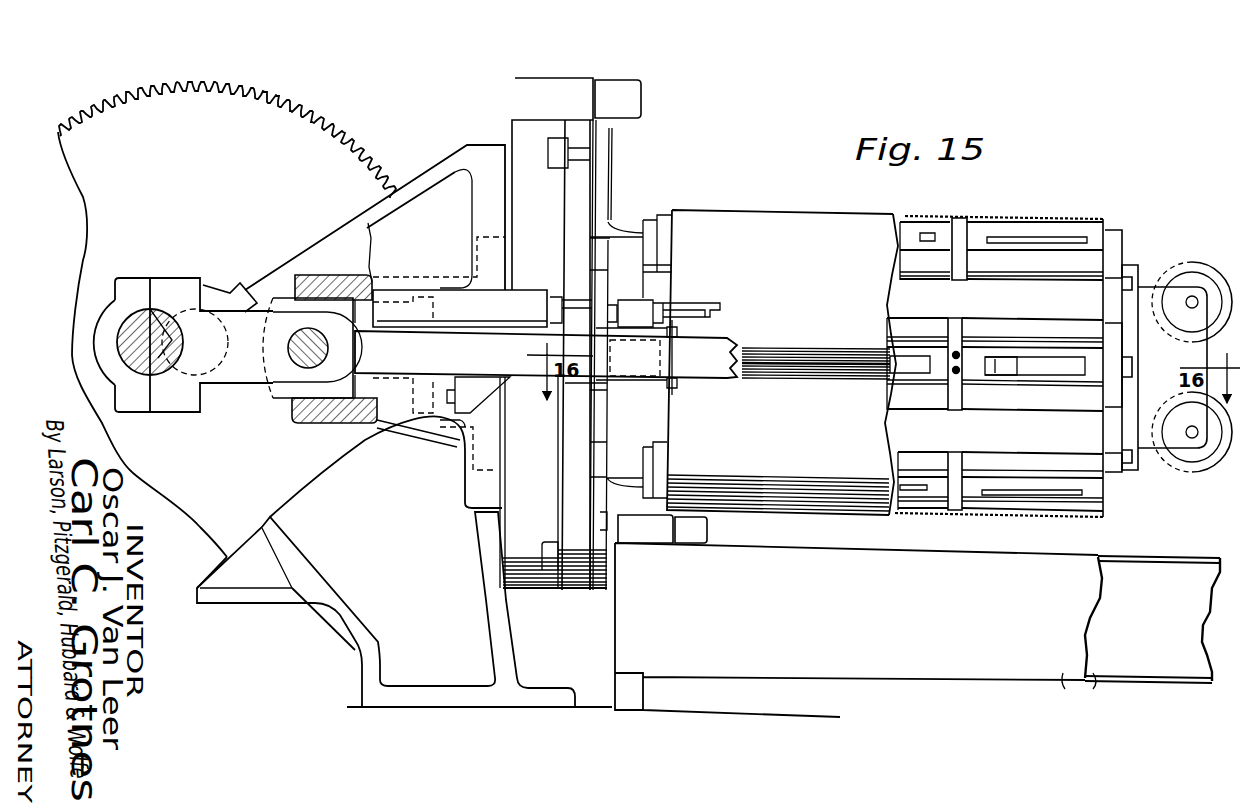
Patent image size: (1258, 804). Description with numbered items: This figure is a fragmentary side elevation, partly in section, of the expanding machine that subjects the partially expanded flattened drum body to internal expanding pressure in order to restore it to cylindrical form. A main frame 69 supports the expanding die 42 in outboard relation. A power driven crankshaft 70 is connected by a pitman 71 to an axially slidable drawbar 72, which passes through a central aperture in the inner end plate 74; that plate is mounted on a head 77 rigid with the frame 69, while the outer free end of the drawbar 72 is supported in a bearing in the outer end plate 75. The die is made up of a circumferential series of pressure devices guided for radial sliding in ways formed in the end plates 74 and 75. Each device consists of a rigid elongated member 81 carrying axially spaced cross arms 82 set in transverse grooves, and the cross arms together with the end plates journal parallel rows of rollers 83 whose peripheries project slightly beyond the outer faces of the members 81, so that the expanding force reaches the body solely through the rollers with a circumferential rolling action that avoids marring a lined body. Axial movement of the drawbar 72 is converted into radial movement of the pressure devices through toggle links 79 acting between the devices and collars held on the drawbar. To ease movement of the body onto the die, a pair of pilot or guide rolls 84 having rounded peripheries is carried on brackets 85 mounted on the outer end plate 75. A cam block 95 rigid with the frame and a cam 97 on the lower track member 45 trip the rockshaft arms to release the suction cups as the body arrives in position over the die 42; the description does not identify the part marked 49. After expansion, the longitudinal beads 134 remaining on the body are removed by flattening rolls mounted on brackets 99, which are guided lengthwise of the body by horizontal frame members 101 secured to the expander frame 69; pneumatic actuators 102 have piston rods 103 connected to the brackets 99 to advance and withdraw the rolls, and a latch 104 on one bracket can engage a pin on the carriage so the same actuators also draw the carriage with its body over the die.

The die 42 is at (1112, 224).
The lower track member 45 is at (1157, 551).
The slot 49 is at (1066, 680).
The main frame 69 is at (357, 607).
The power driven crankshaft 70 is at (125, 322).
The pitman 71 is at (250, 380).
The drawbar 72 is at (290, 398).
The end plate 74 is at (570, 590).
The outer end plate 75 is at (1133, 472).
The head 77 is at (513, 550).
The toggle links 79 is at (1015, 368).
The rigid elongated members 81 is at (937, 233).
The cross arms 82 is at (961, 233).
The rollers 83 is at (897, 255).
The pilot or guide rolls 84 is at (1205, 275).
The brackets 85 is at (1200, 350).
The cam block 95 is at (638, 100).
The cam 97 is at (705, 533).
The brackets 99 is at (680, 331).
The horizontal frame members 101 is at (730, 342).
The pneumatic actuators 102 is at (452, 292).
The piston rods 103 is at (577, 298).
The latch 104 is at (708, 303).
The beads 134 is at (797, 360).